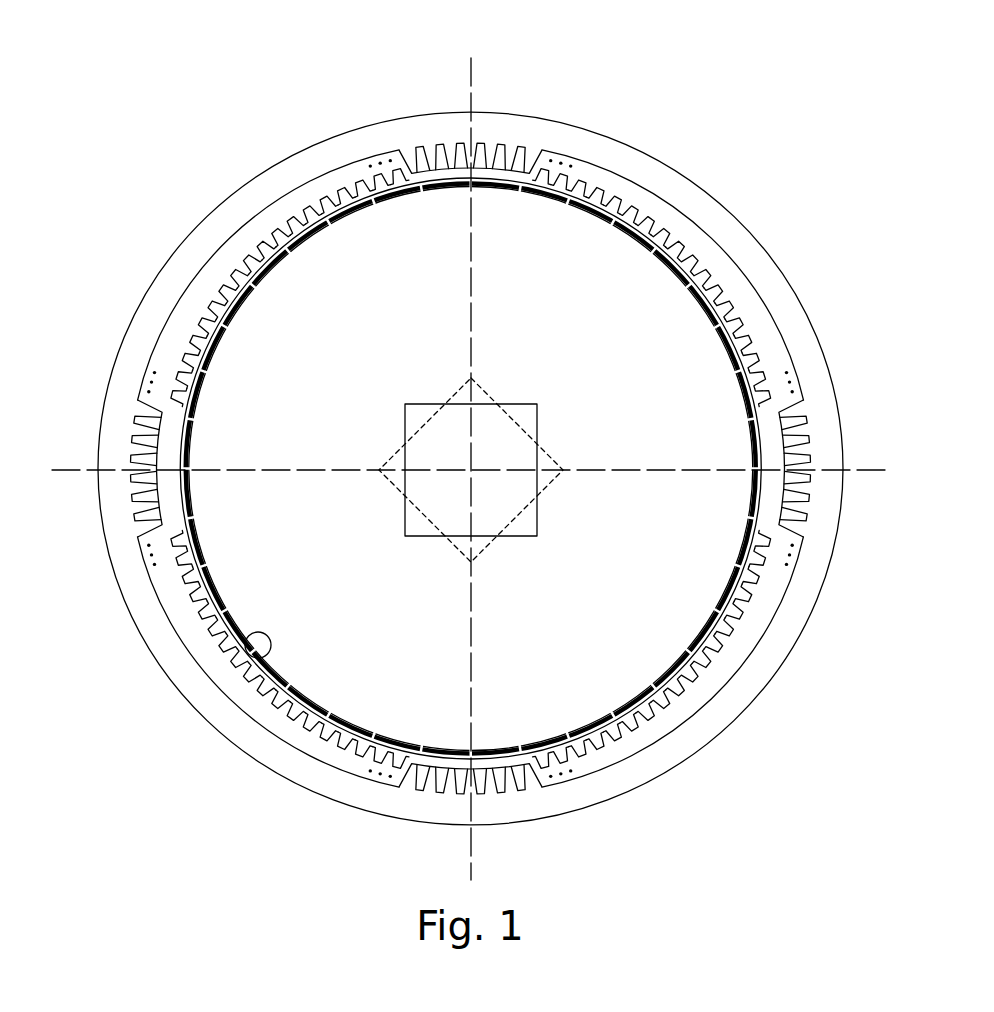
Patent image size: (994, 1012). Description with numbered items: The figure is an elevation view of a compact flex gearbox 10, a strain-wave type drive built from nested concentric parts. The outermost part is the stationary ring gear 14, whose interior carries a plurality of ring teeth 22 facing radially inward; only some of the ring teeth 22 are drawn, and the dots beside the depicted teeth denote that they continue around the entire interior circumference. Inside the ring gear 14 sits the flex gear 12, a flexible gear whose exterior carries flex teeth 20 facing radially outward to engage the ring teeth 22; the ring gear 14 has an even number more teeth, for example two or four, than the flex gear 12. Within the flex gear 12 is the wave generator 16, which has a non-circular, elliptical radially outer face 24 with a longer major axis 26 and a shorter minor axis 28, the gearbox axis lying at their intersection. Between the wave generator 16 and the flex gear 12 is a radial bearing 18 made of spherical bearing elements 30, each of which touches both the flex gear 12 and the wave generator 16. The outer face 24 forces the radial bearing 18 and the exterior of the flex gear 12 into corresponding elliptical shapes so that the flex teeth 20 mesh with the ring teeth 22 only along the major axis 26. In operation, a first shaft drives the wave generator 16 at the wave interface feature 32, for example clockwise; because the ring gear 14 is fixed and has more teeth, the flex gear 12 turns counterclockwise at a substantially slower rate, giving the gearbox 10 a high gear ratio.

The compact flex gearbox 10 is at (203, 86).
The flex gear 12 is at (230, 265).
The ring gear 14 is at (142, 293).
The wave generator 16 is at (266, 372).
The radial bearing 18 is at (182, 580).
The flex teeth 20 is at (196, 618).
The ring teeth 22 is at (140, 505).
The outer face 24 is at (232, 645).
The major axis 26 is at (474, 68).
The minor axis 28 is at (872, 470).
The spherical bearing elements 30 is at (322, 737).
The wave interface feature 32 is at (516, 404).